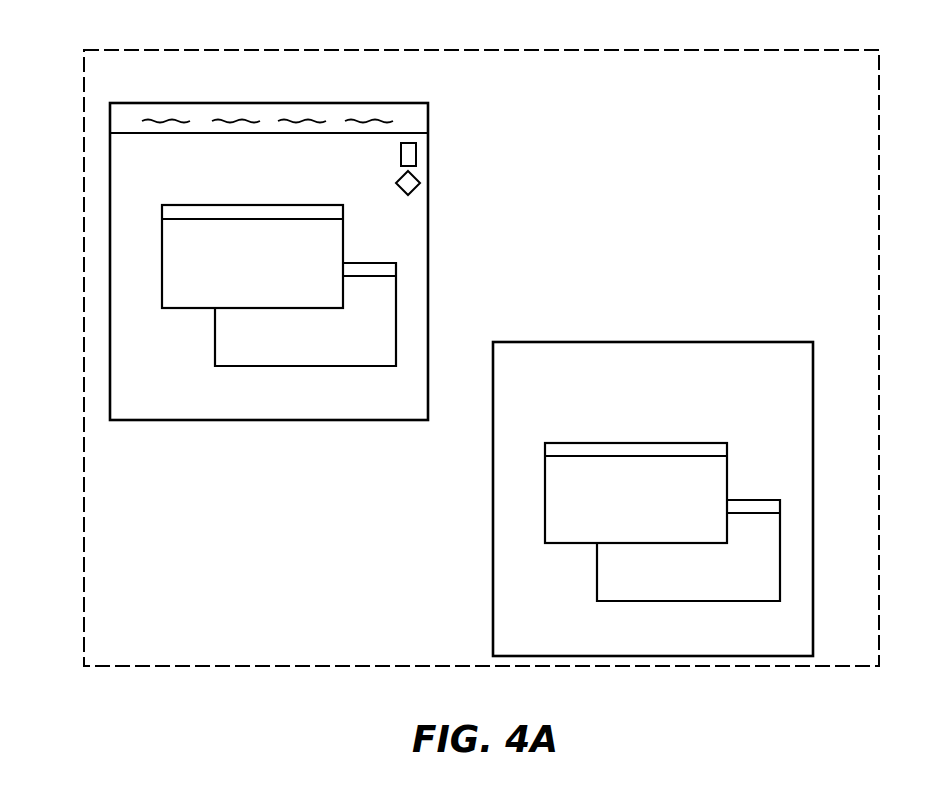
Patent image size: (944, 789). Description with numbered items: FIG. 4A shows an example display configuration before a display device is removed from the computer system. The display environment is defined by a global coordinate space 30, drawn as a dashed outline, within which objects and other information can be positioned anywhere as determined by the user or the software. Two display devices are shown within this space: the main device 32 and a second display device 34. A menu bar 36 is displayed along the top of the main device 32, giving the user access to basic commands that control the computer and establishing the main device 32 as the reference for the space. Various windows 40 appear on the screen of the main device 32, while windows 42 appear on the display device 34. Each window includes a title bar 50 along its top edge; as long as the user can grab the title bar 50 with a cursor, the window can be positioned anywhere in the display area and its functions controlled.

The global coordinate space 30 is at (648, 62).
The main device 32 is at (125, 213).
The display device 34 is at (800, 397).
The menu bar 36 is at (428, 117).
The windows 40 is at (228, 342).
The windows 42 is at (608, 566).
The title bar 50 is at (643, 447).